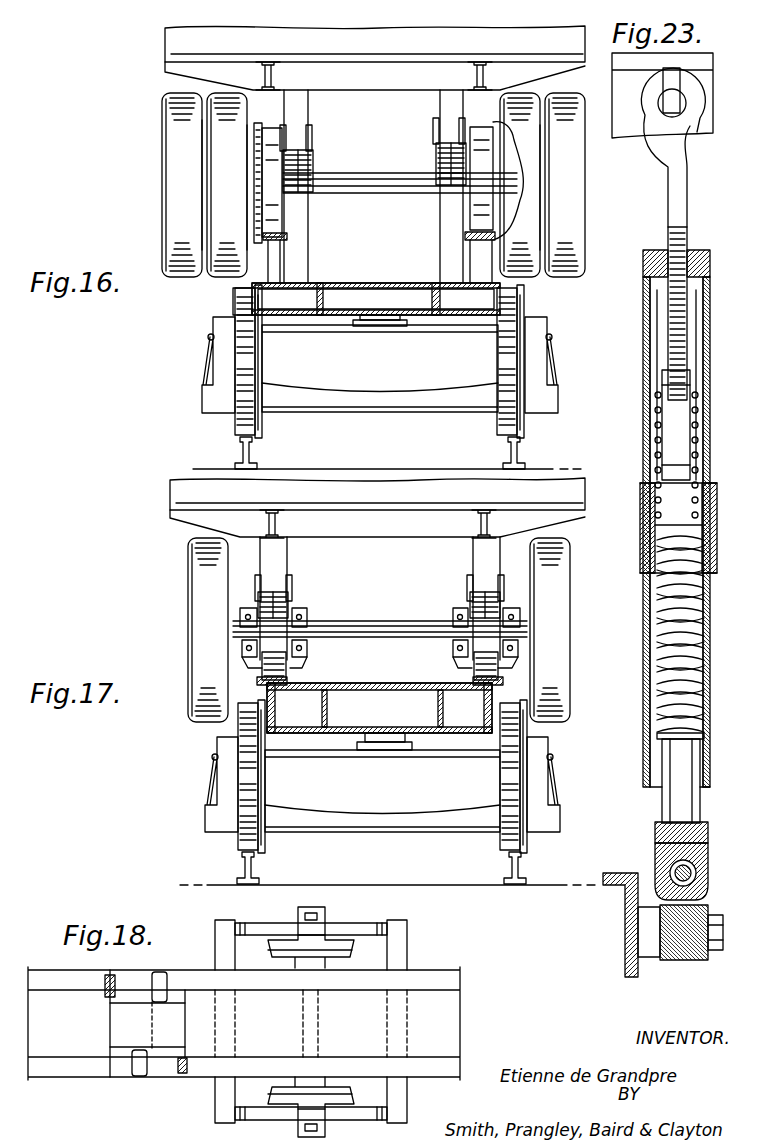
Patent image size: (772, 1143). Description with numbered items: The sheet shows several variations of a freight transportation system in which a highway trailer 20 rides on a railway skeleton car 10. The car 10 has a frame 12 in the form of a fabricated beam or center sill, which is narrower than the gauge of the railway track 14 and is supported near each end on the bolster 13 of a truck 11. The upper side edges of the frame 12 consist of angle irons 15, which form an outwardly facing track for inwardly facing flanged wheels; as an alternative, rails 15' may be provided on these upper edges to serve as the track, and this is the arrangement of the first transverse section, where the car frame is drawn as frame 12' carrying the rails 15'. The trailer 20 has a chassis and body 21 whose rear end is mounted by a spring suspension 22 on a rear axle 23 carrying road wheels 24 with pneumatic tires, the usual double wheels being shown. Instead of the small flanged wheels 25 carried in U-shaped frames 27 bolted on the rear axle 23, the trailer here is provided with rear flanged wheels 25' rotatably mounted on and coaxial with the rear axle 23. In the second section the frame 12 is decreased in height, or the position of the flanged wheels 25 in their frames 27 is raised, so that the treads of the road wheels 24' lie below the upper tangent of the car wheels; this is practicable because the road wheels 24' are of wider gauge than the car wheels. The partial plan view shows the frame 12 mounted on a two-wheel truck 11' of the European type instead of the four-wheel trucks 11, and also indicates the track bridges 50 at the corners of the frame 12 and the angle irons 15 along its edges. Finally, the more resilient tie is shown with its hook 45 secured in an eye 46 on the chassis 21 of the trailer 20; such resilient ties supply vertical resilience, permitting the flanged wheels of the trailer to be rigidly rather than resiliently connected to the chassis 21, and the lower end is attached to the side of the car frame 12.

In FIG. 16, the railway skeleton car 10 is at (415, 278).
In FIG. 17, the railway skeleton car 10 is at (381, 679).
In FIG. 18, the railway skeleton car 10 is at (61, 1087).
In FIG. 23, the railway skeleton car 10 is at (625, 869).
In FIG. 16, the four-wheeled railway truck 11 is at (371, 365).
In FIG. 17, the four-wheeled railway truck 11 is at (380, 785).
In FIG. 18, the two-wheel truck 11' is at (344, 1022).
In FIG. 17, the frame 12 is at (379, 708).
In FIG. 18, the frame 12 is at (342, 1021).
In FIG. 16, the rail wheel frame 12' is at (366, 284).
In FIG. 16, the bolster 13 is at (398, 372).
In FIG. 17, the bolster 13 is at (396, 795).
In FIG. 16, the railway track 14 is at (256, 455).
In FIG. 17, the railway track 14 is at (265, 862).
In FIG. 17, the angle irons 15 is at (380, 675).
In FIG. 18, the angle irons 15 is at (216, 1023).
In FIG. 16, the rails 15' is at (379, 254).
In FIG. 16, the trailer 20 is at (185, 45).
In FIG. 17, the trailer 20 is at (215, 488).
In FIG. 16, the chassis and body 21 is at (183, 70).
In FIG. 17, the chassis and body 21 is at (190, 514).
In FIG. 23, the chassis and body 21 is at (713, 100).
In FIG. 16, the spring suspension 22 is at (298, 163).
In FIG. 17, the spring suspension 22 is at (278, 605).
In FIG. 16, the rear axle 23 is at (406, 192).
In FIG. 17, the rear axle 23 is at (370, 625).
In FIG. 16, the road wheels 24 is at (366, 185).
In FIG. 17, the road wheels 24' is at (366, 630).
In FIG. 17, the flanged wheels 25 is at (380, 661).
In FIG. 16, the rear flanged wheels 25' is at (388, 182).
In FIG. 17, the U-shaped frames 27 is at (303, 618).
In FIG. 23, the hook 45 is at (690, 124).
In FIG. 23, the eye 46 is at (663, 80).
In FIG. 18, the track bridges 50 is at (161, 1043).